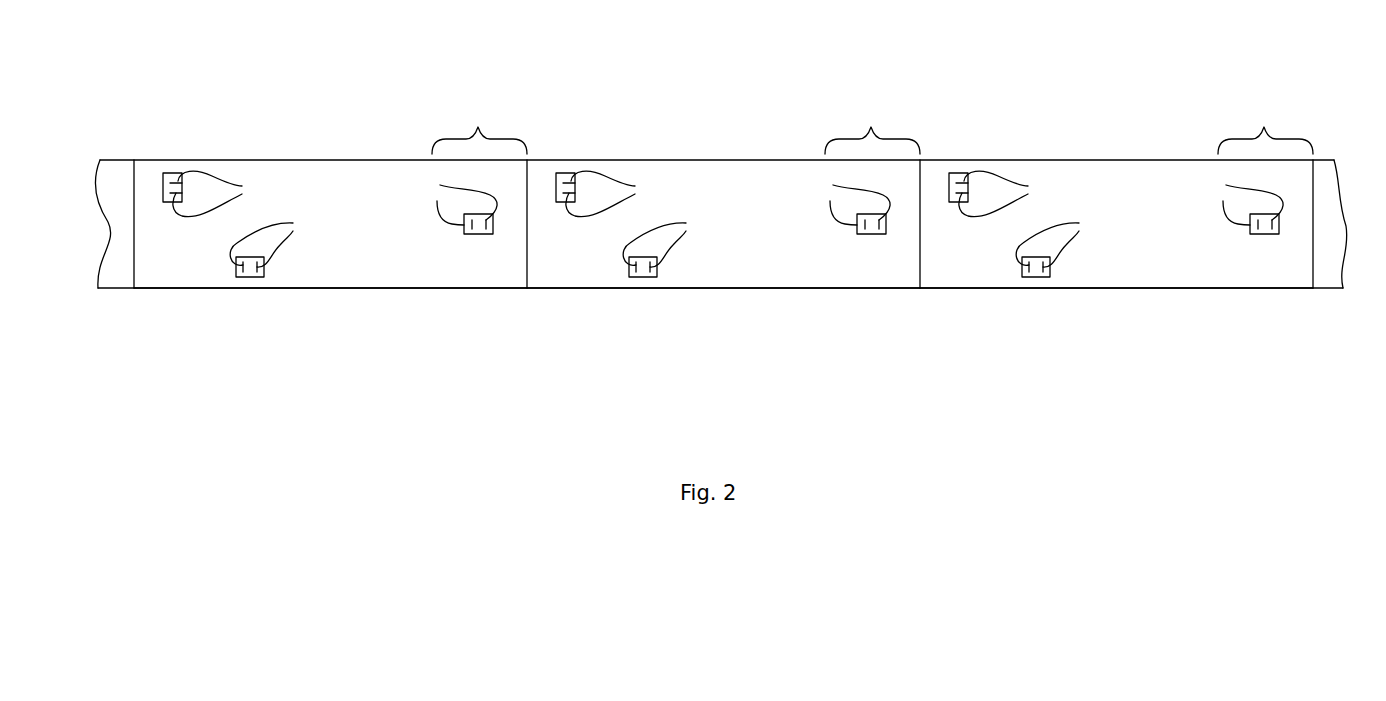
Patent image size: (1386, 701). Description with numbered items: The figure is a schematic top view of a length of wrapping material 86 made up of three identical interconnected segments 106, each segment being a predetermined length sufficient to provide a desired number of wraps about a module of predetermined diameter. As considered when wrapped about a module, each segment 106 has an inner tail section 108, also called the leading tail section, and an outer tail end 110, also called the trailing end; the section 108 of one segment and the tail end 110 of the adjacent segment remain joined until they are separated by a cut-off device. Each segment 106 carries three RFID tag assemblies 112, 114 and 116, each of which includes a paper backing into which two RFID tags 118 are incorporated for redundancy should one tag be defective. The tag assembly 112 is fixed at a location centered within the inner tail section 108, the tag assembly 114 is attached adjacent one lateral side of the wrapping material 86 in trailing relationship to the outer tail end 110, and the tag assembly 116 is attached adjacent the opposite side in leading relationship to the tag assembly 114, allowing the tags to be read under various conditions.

The wrapping material 86 is at (351, 146).
The segment 106 is at (340, 289).
The inner tail section 108 is at (872, 127).
The outer tail end 110 is at (134, 258).
The RFID tag assembly 112 is at (486, 250).
The RFID tag assembly 114 is at (178, 159).
The RFID tag assembly 116 is at (256, 291).
The RFID tag 118 is at (728, 219).